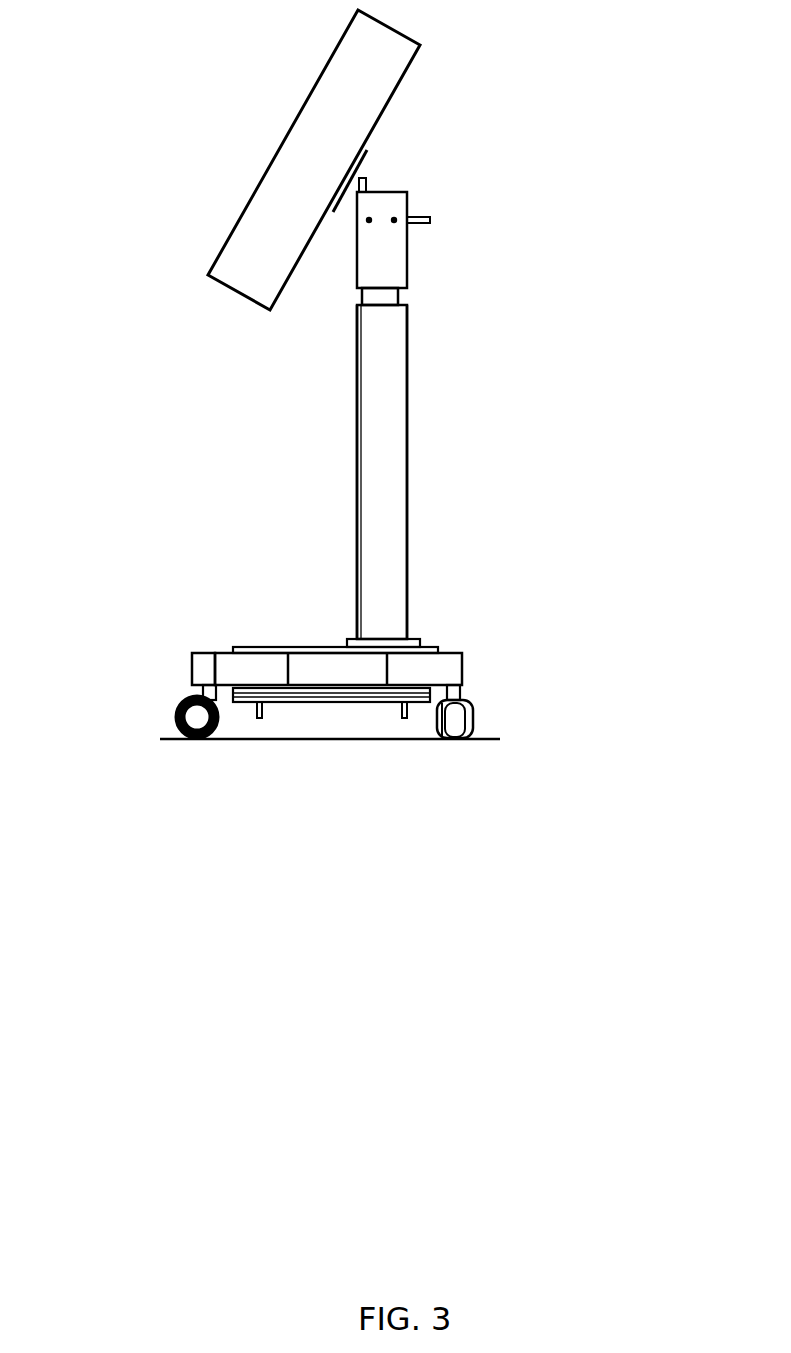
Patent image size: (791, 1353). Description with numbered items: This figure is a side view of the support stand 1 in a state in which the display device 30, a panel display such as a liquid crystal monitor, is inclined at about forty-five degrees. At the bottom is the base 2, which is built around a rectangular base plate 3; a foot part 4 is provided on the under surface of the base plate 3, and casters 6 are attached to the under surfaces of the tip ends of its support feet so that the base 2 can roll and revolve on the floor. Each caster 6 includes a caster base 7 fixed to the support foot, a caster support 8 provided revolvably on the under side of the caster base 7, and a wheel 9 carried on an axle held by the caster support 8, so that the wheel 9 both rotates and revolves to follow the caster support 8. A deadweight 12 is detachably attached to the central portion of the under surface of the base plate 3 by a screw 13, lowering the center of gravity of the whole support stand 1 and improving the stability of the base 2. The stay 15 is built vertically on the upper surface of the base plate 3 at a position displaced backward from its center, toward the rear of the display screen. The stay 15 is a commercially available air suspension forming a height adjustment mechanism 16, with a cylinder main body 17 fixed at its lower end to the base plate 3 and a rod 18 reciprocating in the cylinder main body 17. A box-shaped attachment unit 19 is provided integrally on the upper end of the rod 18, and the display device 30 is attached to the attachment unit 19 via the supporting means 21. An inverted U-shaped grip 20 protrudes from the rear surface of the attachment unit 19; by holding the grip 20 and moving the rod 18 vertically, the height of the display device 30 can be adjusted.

The support stand 1 is at (456, 407).
The base 2 is at (270, 628).
The base plate 3 is at (430, 650).
The foot part 4 is at (203, 628).
The caster 6 is at (498, 714).
The caster base 7 is at (462, 695).
The caster support 8 is at (457, 717).
The wheel 9 is at (442, 707).
The deadweight 12 is at (338, 702).
The screw 13 is at (260, 702).
The stay 15 is at (422, 366).
The height adjustment mechanism 16 is at (345, 418).
The cylinder main body 17 is at (395, 510).
The rod 18 is at (398, 296).
The attachment unit 19 is at (393, 247).
The grip 20 is at (430, 218).
The supporting means 21 is at (385, 163).
The display device 30 is at (348, 62).